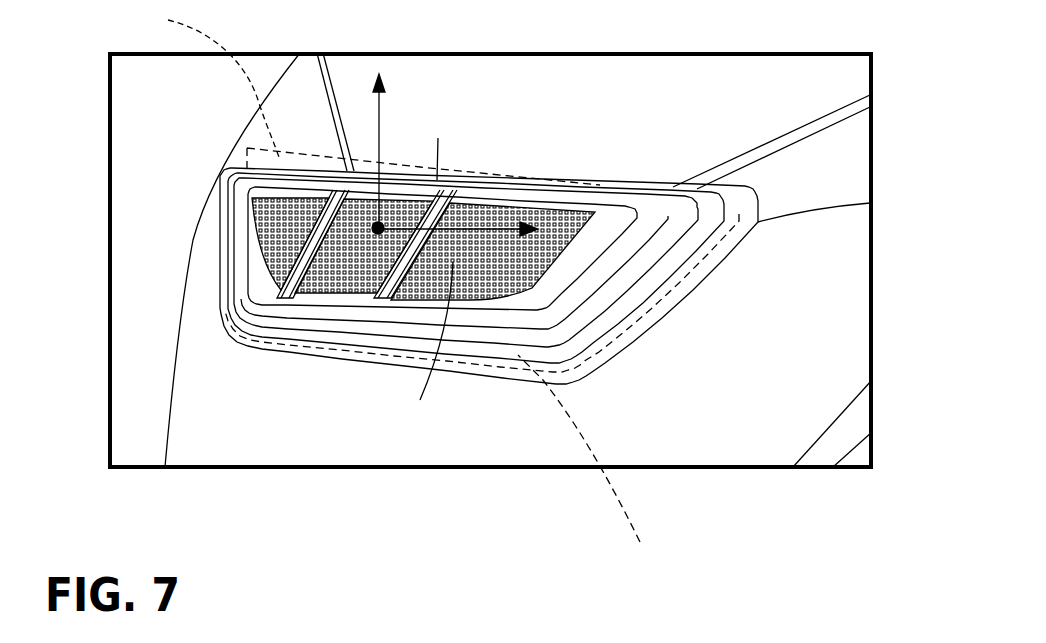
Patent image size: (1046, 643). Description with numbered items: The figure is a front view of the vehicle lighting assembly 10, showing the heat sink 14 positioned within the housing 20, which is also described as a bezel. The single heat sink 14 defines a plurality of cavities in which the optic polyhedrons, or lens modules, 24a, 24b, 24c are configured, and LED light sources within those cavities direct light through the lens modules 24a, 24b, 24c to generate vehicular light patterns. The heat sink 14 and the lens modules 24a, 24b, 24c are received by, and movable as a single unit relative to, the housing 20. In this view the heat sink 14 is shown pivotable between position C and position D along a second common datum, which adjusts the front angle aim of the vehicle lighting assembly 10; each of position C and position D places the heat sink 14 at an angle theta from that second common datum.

The vehicle lighting assembly 10 is at (738, 90).
The heat sink 14 is at (262, 277).
The housing 20 is at (708, 262).
The optic polyhedron 24a is at (278, 230).
The optic polyhedron 24b is at (343, 268).
The optic polyhedron 24c is at (490, 282).
The position C is at (372, 96).
The position D is at (584, 462).